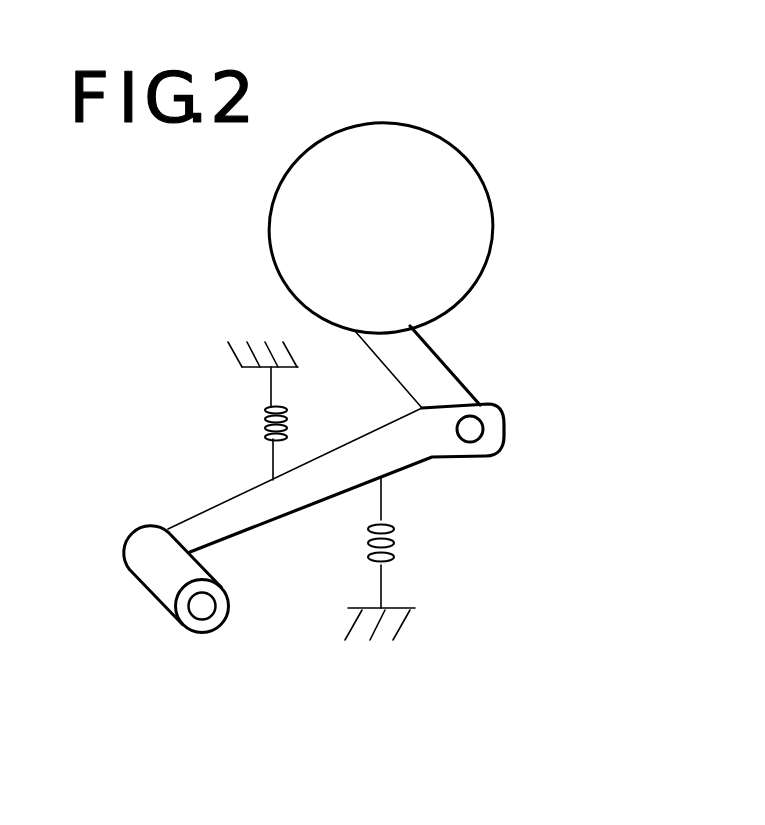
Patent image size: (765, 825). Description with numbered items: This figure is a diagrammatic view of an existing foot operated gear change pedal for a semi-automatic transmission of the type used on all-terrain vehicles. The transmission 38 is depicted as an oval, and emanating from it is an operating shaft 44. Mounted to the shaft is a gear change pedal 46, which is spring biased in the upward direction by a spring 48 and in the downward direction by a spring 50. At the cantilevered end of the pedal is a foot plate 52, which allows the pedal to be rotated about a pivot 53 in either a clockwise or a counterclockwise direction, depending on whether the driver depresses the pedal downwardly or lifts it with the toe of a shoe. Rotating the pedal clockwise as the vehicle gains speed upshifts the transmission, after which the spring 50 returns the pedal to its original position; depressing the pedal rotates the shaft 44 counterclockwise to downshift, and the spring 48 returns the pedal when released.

The transmission 38 is at (443, 187).
The operating shaft 44 is at (447, 390).
The gear change pedal 46 is at (215, 505).
The spring 48 is at (268, 427).
The spring 50 is at (383, 532).
The foot plate 52 is at (168, 572).
The pivot 53 is at (465, 418).